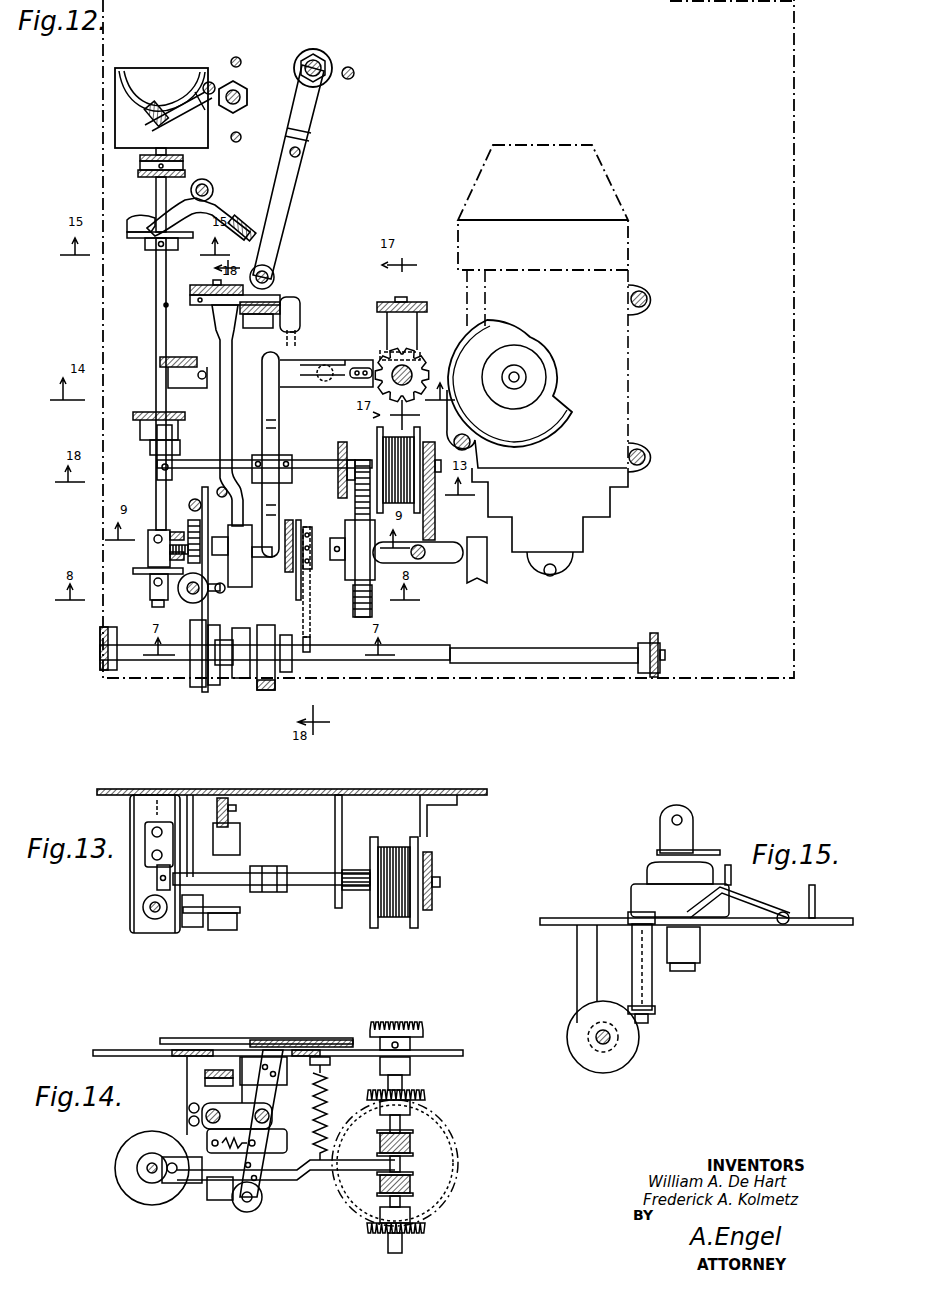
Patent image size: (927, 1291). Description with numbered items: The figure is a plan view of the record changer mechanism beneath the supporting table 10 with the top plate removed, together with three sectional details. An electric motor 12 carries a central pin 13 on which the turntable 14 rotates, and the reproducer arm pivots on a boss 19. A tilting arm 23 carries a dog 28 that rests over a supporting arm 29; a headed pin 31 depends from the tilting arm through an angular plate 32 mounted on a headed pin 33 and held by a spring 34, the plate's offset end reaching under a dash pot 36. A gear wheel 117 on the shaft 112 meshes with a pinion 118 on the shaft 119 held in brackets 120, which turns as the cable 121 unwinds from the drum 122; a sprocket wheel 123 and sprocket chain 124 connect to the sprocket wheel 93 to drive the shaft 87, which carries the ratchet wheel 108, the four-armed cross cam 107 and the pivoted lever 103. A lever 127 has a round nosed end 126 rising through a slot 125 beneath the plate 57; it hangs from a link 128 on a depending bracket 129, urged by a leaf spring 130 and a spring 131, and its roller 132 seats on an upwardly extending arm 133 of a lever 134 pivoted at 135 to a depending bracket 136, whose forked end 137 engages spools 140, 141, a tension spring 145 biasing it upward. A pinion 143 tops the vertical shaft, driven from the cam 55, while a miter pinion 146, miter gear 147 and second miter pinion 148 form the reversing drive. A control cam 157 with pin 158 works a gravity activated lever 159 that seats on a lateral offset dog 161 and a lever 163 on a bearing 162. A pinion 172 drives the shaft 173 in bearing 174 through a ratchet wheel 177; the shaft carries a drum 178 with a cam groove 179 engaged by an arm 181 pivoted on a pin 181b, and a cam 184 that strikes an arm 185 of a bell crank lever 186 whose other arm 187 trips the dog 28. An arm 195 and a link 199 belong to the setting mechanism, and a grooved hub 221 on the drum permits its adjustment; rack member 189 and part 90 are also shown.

In FIG. 12, the supporting table 10 is at (794, 327).
In FIG. 12, the electric motor 12 is at (612, 500).
In FIG. 12, the central pin 13 is at (525, 370).
In FIG. 12, the turntable 14 is at (416, 374).
In FIG. 15, the boss 19 is at (657, 872).
In FIG. 15, the tilting arm 23 is at (760, 905).
In FIG. 12, the dog 28 is at (260, 232).
In FIG. 15, the dog 28 is at (703, 943).
In FIG. 15, the supporting arm 29 is at (697, 967).
In FIG. 12, the headed pin 31 is at (302, 152).
In FIG. 12, the angular plate 32 is at (296, 190).
In FIG. 12, the headed pin 33 is at (276, 272).
In FIG. 12, the spring 34 is at (275, 292).
In FIG. 12, the dash pot 36 is at (330, 80).
In FIG. 12, the cam 55 is at (488, 335).
In FIG. 14, the plate 57 is at (278, 1050).
In FIG. 12, the shaft 87 is at (508, 663).
In FIG. 12, the shaft 90 is at (410, 660).
In FIG. 12, the sprocket wheel 93 is at (302, 672).
In FIG. 12, the pivoted lever 103 is at (248, 680).
In FIG. 12, the four-armed cross cam 107 is at (214, 690).
In FIG. 12, the ratchet wheel 108 is at (195, 688).
In FIG. 12, the shaft 112 is at (290, 575).
In FIG. 12, the gear wheel 117 is at (376, 612).
In FIG. 12, the pinion 118 is at (355, 455).
In FIG. 13, the pinion 118 is at (360, 900).
In FIG. 12, the shaft 119 is at (300, 473).
In FIG. 13, the shaft 119 is at (322, 890).
In FIG. 12, the brackets 120 is at (162, 446).
In FIG. 13, the brackets 120 is at (335, 834).
In FIG. 12, the cable 121 is at (412, 432).
In FIG. 13, the cable 121 is at (392, 840).
In FIG. 12, the drum 122 is at (430, 445).
In FIG. 13, the drum 122 is at (425, 840).
In FIG. 12, the sprocket wheel 123 is at (318, 518).
In FIG. 12, the sprocket chain 124 is at (312, 630).
In FIG. 14, the slot 125 is at (190, 1037).
In FIG. 14, the round nosed end 126 is at (257, 1040).
In FIG. 12, the lever 127 is at (282, 306).
In FIG. 14, the lever 127 is at (270, 1138).
In FIG. 14, the link 128 is at (232, 1105).
In FIG. 14, the depending bracket 129 is at (185, 1065).
In FIG. 14, the leaf spring 130 is at (189, 1117).
In FIG. 14, the spring 131 is at (222, 1180).
In FIG. 14, the roller 132 is at (248, 1212).
In FIG. 12, the upwardly extending arm 133 is at (300, 313).
In FIG. 14, the upwardly extending arm 133 is at (285, 1183).
In FIG. 12, the lever 134 is at (306, 358).
In FIG. 14, the lever 134 is at (283, 1183).
In FIG. 14, the pivot 135 is at (170, 1190).
In FIG. 12, the depending bracket 136 is at (160, 361).
In FIG. 14, the bifurcated forked end 137 is at (375, 1165).
In FIG. 14, the spool 140 is at (415, 1137).
In FIG. 14, the spool 141 is at (415, 1180).
In FIG. 14, the pinion 143 is at (372, 1022).
In FIG. 14, the tension spring 145 is at (328, 1110).
In FIG. 14, the miter pinion 146 is at (420, 1093).
In FIG. 14, the miter gear 147 is at (450, 1115).
In FIG. 14, the second miter pinion 148 is at (425, 1228).
In FIG. 12, the control cam 157 is at (236, 592).
In FIG. 12, the pin 158 is at (255, 560).
In FIG. 12, the gravity activated lever 159 is at (218, 335).
In FIG. 13, the gravity activated lever 159 is at (230, 825).
In FIG. 14, the gravity activated lever 159 is at (205, 1075).
In FIG. 14, the lateral offset dog 161 is at (270, 1088).
In FIG. 13, the bearing 162 is at (256, 866).
In FIG. 12, the lever 163 is at (282, 405).
In FIG. 13, the lever 163 is at (255, 895).
In FIG. 12, the pinion 172 is at (148, 552).
In FIG. 12, the shaft 173 is at (163, 312).
In FIG. 13, the shaft 173 is at (143, 907).
In FIG. 14, the shaft 173 is at (147, 1168).
In FIG. 15, the shaft 173 is at (610, 1045).
In FIG. 12, the bearing 174 is at (132, 416).
In FIG. 12, the ratchet wheel 177 is at (140, 580).
In FIG. 12, the drum 178 is at (122, 130).
In FIG. 12, the cam groove 179 is at (122, 108).
In FIG. 12, the arm 181 is at (158, 104).
In FIG. 12, the pin 181b is at (211, 82).
In FIG. 12, the cam 184 is at (126, 224).
In FIG. 15, the cam 184 is at (568, 1030).
In FIG. 12, the arm 185 is at (181, 200).
In FIG. 15, the arm 185 is at (640, 1047).
In FIG. 12, the bell crank lever 186 is at (205, 180).
In FIG. 15, the bell crank lever 186 is at (655, 1000).
In FIG. 12, the arm 187 is at (242, 214).
In FIG. 15, the arm 187 is at (655, 955).
In FIG. 12, the gear rack 189 is at (360, 590).
In FIG. 12, the arm 195 is at (480, 583).
In FIG. 12, the link 199 is at (445, 565).
In FIG. 12, the grooved hub 221 is at (138, 165).